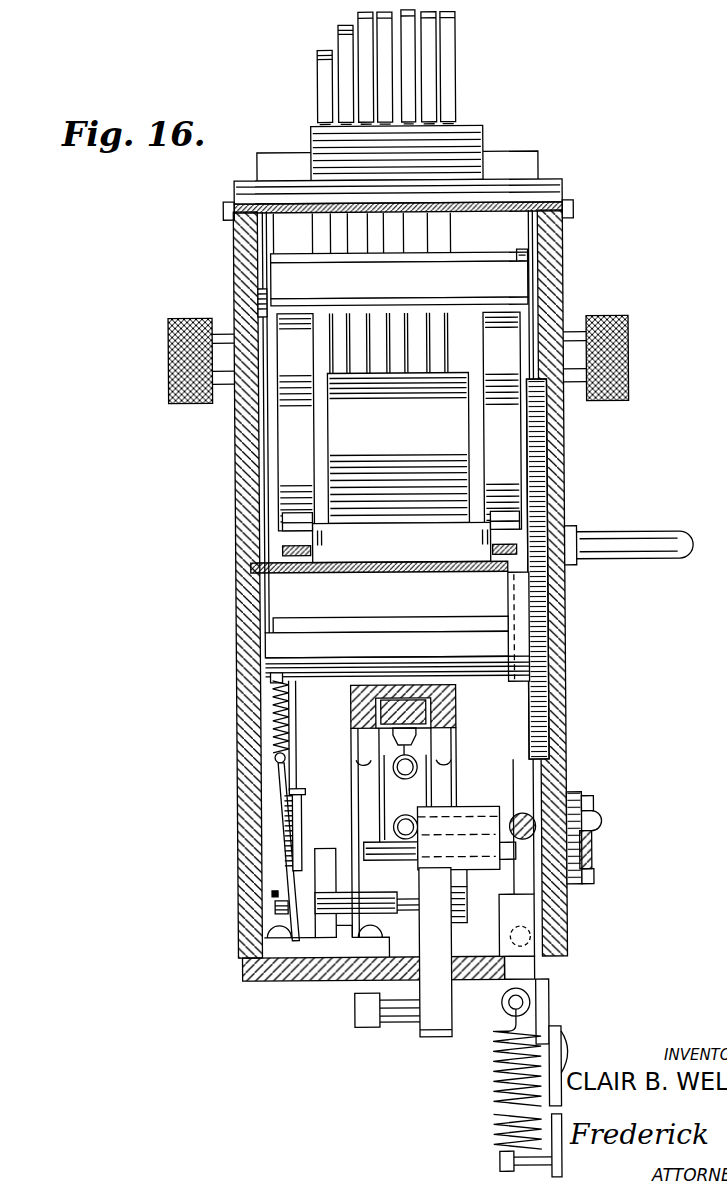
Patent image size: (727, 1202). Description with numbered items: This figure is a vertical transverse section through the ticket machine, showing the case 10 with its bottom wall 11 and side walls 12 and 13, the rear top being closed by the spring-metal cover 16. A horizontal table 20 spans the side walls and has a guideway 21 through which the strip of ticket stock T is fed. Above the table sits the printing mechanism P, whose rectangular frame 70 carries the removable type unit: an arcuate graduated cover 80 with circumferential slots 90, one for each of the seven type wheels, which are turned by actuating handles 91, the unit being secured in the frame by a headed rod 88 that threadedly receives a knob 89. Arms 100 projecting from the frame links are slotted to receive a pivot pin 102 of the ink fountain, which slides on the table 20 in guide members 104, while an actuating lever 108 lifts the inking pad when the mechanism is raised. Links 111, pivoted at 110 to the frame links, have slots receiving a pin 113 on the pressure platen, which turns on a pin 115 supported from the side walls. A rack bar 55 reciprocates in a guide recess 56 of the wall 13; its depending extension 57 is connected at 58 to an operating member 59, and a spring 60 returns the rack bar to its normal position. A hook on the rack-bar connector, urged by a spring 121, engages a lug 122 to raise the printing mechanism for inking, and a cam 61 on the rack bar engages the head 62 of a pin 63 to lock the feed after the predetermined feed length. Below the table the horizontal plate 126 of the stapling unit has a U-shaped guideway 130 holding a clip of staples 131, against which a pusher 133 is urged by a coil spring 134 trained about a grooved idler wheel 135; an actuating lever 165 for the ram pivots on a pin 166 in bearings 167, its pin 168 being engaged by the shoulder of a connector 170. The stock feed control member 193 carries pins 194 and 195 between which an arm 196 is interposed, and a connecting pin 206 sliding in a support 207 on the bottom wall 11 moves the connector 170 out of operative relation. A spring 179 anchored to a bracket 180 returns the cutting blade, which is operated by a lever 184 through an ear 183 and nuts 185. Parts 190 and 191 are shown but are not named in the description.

The actuating handles 91 is at (427, 62).
The arcuate indicia-bearing cover 80 is at (462, 135).
The printing mechanism P is at (489, 146).
The rectangular frame 70 is at (263, 152).
The cover 16 is at (530, 208).
The lug 122 is at (527, 272).
The side wall 13 is at (554, 282).
The spring 121 is at (534, 308).
The pivotal connection 110 is at (258, 307).
The headed rod 88 is at (170, 330).
The knob 89 is at (615, 352).
The arms 100 is at (281, 443).
The links 111 is at (268, 472).
The case 10 is at (238, 503).
The circumferential slots 90 is at (380, 368).
The actuating lever 108 is at (398, 448).
The ticket stock T is at (393, 565).
The pivot pin 102 is at (285, 518).
The guide members 104 is at (535, 550).
The table 20 is at (262, 572).
The guideway 21 is at (327, 565).
The rack bar 55 is at (390, 633).
The cam 61 is at (527, 605).
The side wall 12 is at (240, 664).
The stock feed control member 193 is at (576, 668).
The pin 115 is at (469, 665).
The pin 113 is at (277, 700).
The spring 179 is at (282, 735).
The bracket 180 is at (283, 777).
The actuating lever 184 is at (300, 866).
The grooved idler wheel 135 is at (370, 792).
The ear 183 is at (272, 893).
The nuts 185 is at (278, 905).
The base block 190 is at (306, 955).
The shaft 191 is at (375, 903).
The bearings 167 is at (353, 823).
The horizontal plate 126 is at (452, 716).
The clip of staples 131 is at (378, 713).
The longitudinal guideway 130 is at (456, 731).
The pusher 133 is at (398, 726).
The coil spring 134 is at (422, 776).
The pin 63 is at (511, 820).
The pin 168 is at (520, 853).
The connector 170 is at (527, 787).
The guide recess 56 is at (556, 771).
The head 62 is at (527, 898).
The support 207 is at (512, 917).
The connecting pin 206 is at (520, 962).
The pin 166 is at (463, 903).
The actuating lever 165 is at (420, 1038).
The pin 194 is at (592, 804).
The pin 195 is at (592, 876).
The arm 196 is at (588, 842).
The depending extension 57 is at (540, 1000).
The connection 58 is at (570, 1046).
The spring 60 is at (490, 1069).
The operating member 59 is at (505, 1163).
The bottom wall 11 is at (256, 980).